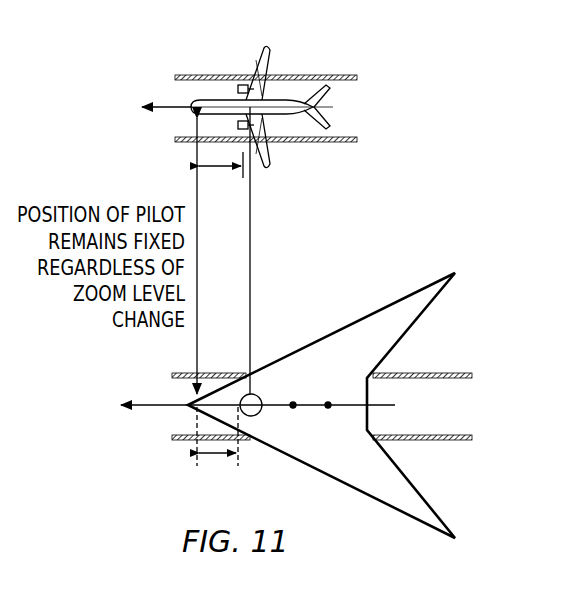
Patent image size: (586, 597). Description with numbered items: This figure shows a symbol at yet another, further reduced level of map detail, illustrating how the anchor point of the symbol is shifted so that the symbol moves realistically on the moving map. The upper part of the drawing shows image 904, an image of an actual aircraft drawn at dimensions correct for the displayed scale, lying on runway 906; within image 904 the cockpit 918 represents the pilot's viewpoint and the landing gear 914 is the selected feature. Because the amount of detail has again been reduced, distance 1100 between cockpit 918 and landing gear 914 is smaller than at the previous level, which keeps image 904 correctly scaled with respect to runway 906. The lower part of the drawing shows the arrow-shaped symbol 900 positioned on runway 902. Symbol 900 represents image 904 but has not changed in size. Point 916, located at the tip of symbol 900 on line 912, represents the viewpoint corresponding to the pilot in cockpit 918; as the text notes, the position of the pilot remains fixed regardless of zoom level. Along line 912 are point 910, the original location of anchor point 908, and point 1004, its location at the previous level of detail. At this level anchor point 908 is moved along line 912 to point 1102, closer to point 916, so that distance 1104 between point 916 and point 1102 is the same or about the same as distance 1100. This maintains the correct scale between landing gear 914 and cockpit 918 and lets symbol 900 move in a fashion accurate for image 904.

The symbol 900 is at (364, 498).
The runway 902 is at (458, 418).
The image 904 is at (256, 60).
The runway 906 is at (355, 104).
The anchor point 908 is at (254, 394).
The point 910 is at (328, 402).
The line 912 is at (154, 404).
The landing gear 914 is at (260, 117).
The point 916 is at (186, 407).
The cockpit 918 is at (191, 104).
The point 1004 is at (294, 408).
The distance 1100 is at (207, 170).
The point 1102 is at (255, 417).
The distance 1104 is at (217, 456).